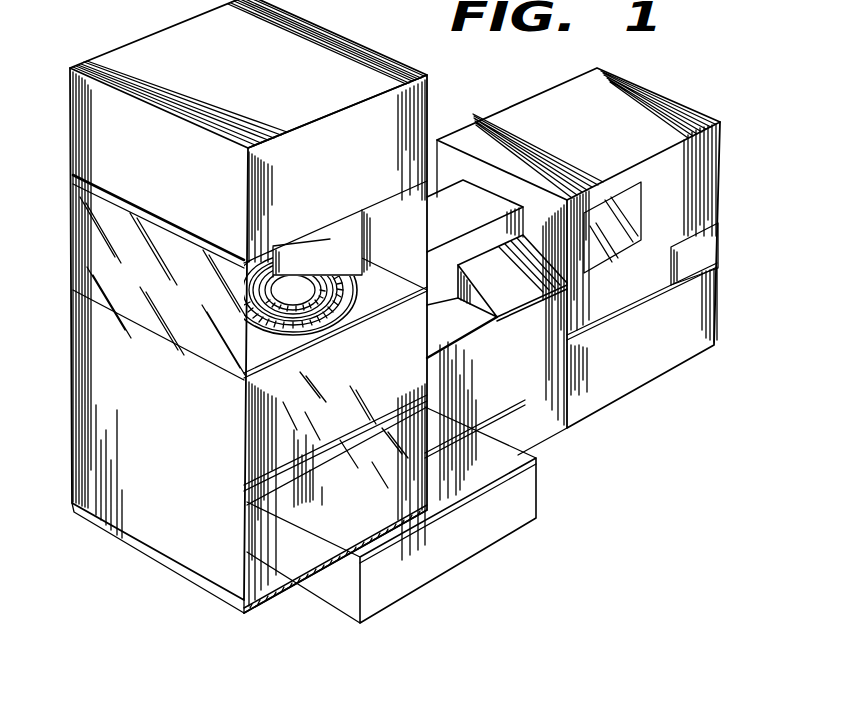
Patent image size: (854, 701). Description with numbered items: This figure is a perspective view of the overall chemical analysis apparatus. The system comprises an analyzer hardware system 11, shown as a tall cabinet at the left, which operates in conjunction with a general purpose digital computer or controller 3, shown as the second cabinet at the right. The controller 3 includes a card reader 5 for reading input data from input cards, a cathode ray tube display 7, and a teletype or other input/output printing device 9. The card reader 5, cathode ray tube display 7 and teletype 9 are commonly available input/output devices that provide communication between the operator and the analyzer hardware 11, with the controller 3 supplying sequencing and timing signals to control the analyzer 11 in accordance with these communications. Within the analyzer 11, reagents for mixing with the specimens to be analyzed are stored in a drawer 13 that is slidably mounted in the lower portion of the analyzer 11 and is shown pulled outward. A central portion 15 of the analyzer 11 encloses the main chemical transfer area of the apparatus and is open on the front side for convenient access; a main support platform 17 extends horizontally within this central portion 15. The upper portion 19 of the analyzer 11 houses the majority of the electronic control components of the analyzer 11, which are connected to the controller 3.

The controller 3 is at (690, 327).
The card reader 5 is at (700, 240).
The cathode ray tube display 7 is at (620, 215).
The teletype 9 is at (533, 436).
The analyzer hardware system 11 is at (431, 100).
The drawer 13 is at (343, 488).
The central portion 15 is at (95, 246).
The main support platform 17 is at (278, 353).
The upper portion 19 is at (96, 133).